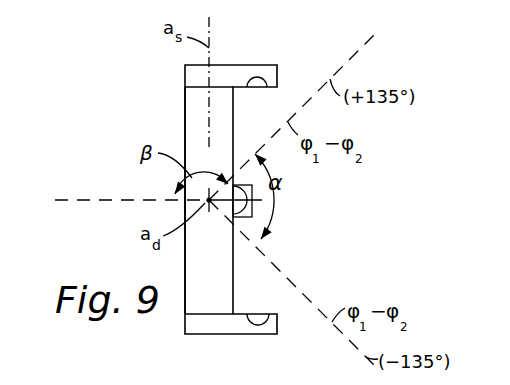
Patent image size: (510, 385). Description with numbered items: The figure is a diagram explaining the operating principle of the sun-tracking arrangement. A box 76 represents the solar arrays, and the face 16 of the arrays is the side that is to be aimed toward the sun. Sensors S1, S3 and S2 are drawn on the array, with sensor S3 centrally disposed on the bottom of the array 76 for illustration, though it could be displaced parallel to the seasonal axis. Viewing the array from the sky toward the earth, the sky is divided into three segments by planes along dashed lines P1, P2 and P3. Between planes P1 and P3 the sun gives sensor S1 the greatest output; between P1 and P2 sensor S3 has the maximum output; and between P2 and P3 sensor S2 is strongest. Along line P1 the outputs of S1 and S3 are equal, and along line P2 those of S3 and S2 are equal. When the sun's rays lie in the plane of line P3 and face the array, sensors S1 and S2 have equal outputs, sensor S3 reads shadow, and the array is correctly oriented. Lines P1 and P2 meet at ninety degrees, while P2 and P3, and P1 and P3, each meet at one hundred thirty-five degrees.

The face of the arrays 16 is at (185, 95).
The box representing the arrays 76 is at (185, 127).
The sensor S1 is at (264, 66).
The sensor S2 is at (265, 334).
The sensor S3 is at (272, 210).
The dashed line (plane) P1 is at (365, 42).
The dashed line (plane) P2 is at (292, 281).
The dashed line (plane) P3 is at (92, 200).